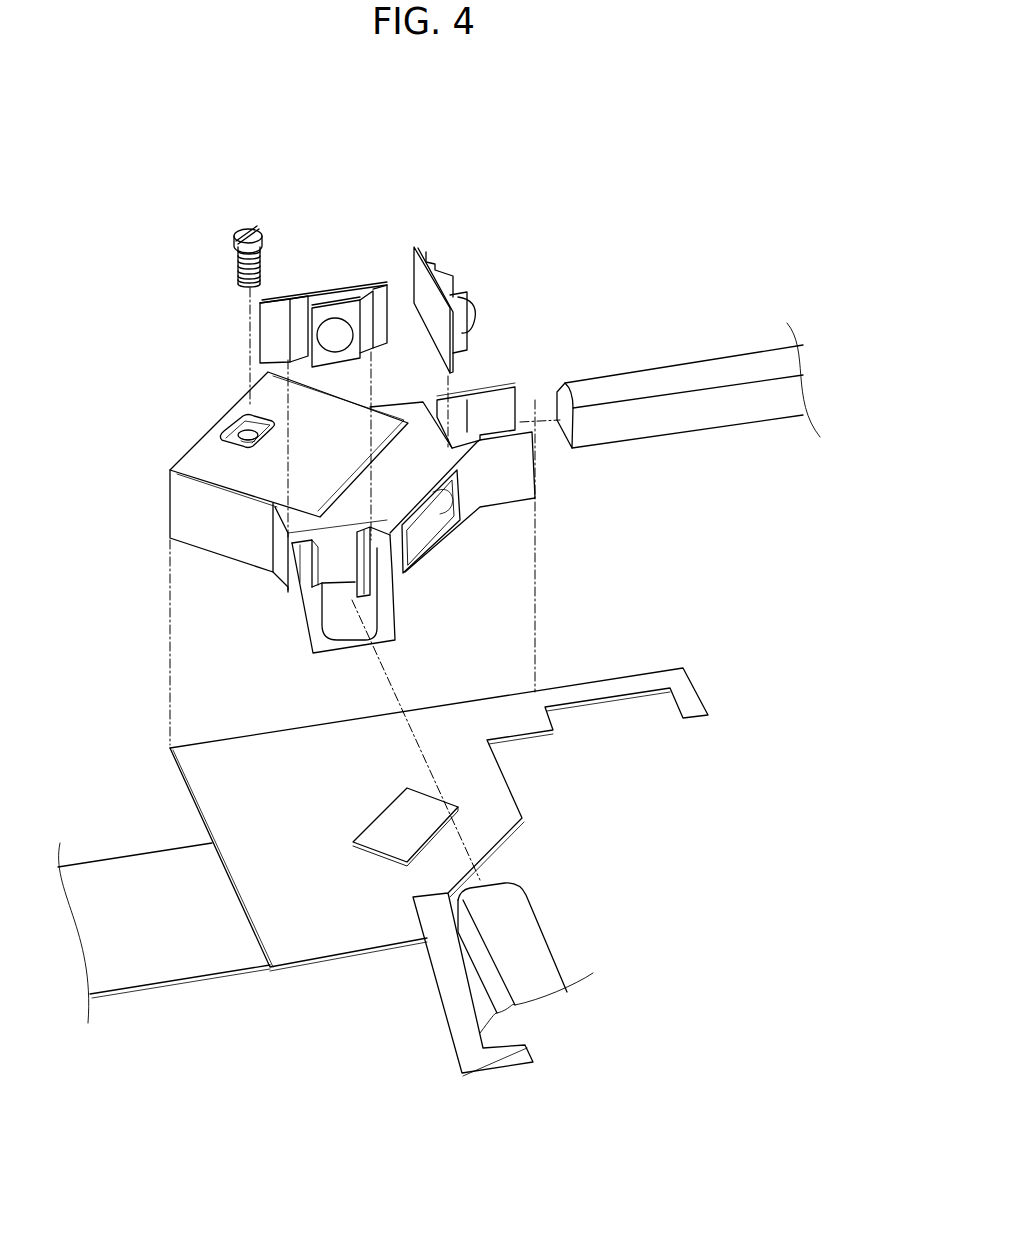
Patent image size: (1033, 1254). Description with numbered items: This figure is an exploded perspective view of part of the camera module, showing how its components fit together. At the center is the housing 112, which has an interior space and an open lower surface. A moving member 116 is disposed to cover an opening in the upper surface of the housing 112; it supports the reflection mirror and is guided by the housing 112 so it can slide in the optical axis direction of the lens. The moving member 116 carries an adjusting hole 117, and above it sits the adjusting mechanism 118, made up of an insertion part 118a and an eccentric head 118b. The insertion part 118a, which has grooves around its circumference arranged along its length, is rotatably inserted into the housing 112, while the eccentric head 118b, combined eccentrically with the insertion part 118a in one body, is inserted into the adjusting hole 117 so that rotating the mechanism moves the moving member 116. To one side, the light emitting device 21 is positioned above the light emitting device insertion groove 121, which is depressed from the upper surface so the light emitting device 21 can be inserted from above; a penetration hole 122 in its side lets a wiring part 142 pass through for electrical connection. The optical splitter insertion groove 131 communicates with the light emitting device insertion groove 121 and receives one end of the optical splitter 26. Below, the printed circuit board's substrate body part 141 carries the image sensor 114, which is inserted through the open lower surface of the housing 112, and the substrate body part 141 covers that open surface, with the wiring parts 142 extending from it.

The adjusting mechanism 118 is at (178, 258).
The insertion part 118a is at (243, 273).
The eccentric head 118b is at (237, 233).
The light emitting device 21 is at (445, 280).
The adjusting hole 117 is at (232, 428).
The moving member 116 is at (270, 444).
The housing 112 is at (324, 487).
The penetration hole 122 is at (290, 580).
The light emitting device insertion groove 121 is at (368, 527).
The optical splitter insertion groove 131 is at (347, 590).
The wiring part 142 is at (632, 675).
The image sensor 114 is at (383, 845).
The substrate body part 141 is at (203, 960).
The optical splitter 26 is at (713, 418).